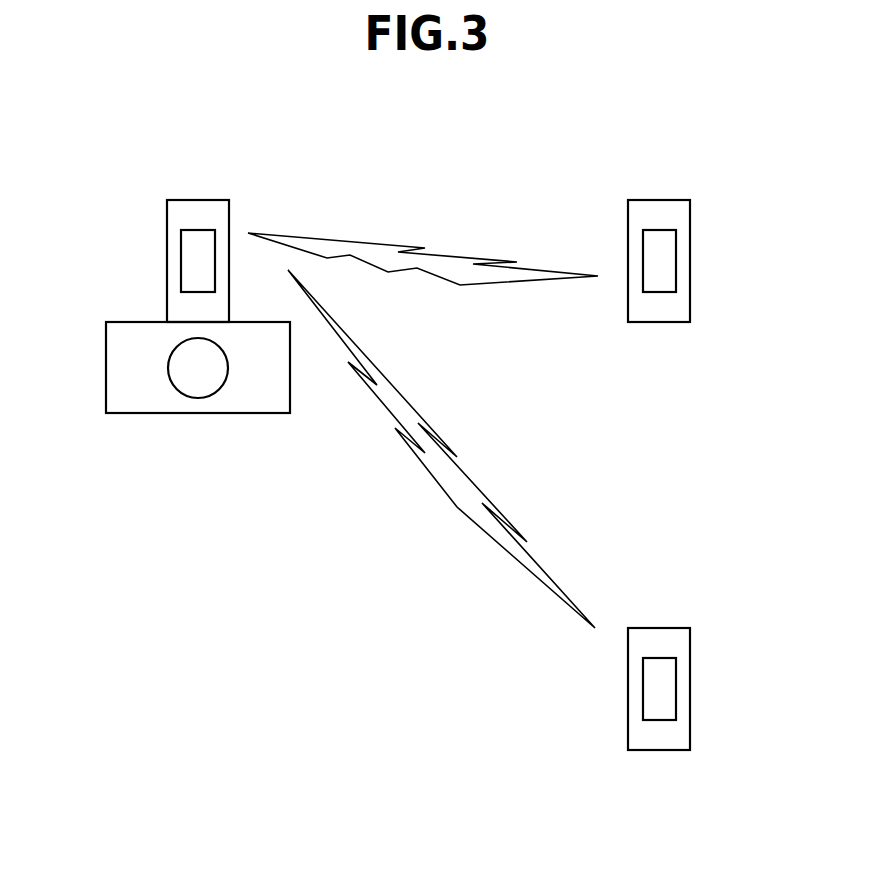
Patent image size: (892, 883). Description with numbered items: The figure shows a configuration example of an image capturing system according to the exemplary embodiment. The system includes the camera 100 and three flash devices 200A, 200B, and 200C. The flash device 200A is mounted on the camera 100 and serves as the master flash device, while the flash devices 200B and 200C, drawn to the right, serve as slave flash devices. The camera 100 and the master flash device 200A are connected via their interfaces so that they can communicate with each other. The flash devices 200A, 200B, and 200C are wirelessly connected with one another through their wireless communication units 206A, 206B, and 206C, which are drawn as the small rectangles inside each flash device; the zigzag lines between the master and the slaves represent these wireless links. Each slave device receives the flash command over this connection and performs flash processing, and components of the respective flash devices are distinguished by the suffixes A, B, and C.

The camera 100 is at (198, 413).
The flash device 200A is at (200, 200).
The wireless communication unit 206A is at (181, 262).
The flash device 200B is at (660, 200).
The wireless communication unit 206B is at (676, 262).
The flash device 200C is at (660, 628).
The wireless communication unit 206C is at (676, 690).